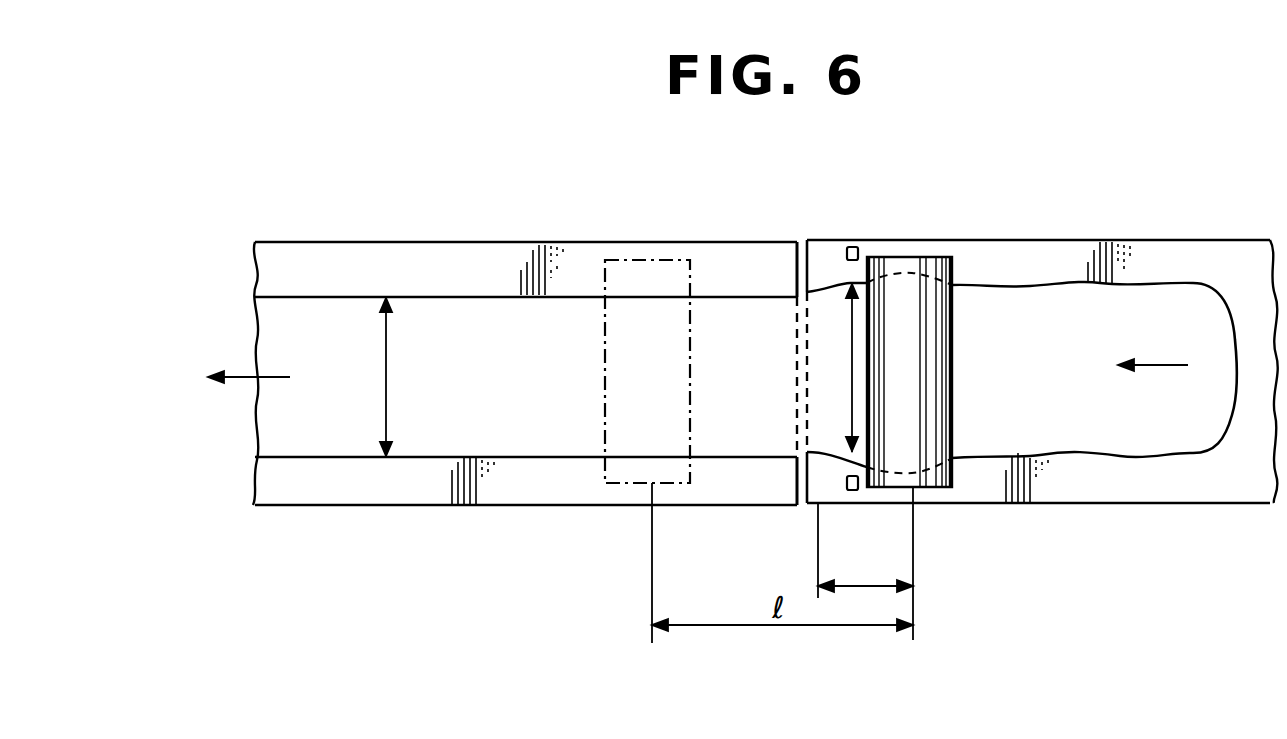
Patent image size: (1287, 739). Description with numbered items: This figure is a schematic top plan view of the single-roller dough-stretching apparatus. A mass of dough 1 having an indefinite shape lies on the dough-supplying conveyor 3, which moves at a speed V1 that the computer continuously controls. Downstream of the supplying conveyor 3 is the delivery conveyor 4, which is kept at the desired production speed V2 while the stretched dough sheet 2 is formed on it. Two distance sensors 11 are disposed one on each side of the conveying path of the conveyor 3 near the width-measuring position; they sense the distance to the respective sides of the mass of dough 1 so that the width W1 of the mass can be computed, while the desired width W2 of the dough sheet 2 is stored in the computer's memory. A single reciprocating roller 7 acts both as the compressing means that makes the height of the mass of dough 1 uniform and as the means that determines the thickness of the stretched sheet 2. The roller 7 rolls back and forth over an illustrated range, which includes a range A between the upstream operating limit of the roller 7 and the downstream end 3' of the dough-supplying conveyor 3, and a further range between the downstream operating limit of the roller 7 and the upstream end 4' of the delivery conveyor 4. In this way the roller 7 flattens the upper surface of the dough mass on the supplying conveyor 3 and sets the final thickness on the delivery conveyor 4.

The mass of dough 1 is at (1168, 283).
The dough sheet 2 is at (307, 308).
The dough-supplying conveyor 3 is at (1042, 332).
The downstream end of the dough-supplying conveyor 3' is at (827, 332).
The delivery conveyor 4 is at (525, 333).
The upstream end of the delivery conveyor 4' is at (772, 333).
The reciprocating roller 7 is at (636, 260).
The distance sensors 11 is at (853, 248).
The width of the mass of dough W1 is at (838, 367).
The desired width of the dough sheet W2 is at (374, 377).
The speed of the dough-supplying conveyor V1 is at (1135, 364).
The desired production speed V2 is at (227, 378).
The range A is at (865, 550).